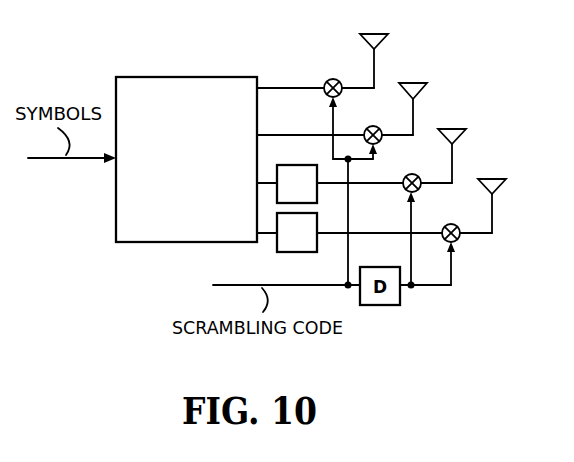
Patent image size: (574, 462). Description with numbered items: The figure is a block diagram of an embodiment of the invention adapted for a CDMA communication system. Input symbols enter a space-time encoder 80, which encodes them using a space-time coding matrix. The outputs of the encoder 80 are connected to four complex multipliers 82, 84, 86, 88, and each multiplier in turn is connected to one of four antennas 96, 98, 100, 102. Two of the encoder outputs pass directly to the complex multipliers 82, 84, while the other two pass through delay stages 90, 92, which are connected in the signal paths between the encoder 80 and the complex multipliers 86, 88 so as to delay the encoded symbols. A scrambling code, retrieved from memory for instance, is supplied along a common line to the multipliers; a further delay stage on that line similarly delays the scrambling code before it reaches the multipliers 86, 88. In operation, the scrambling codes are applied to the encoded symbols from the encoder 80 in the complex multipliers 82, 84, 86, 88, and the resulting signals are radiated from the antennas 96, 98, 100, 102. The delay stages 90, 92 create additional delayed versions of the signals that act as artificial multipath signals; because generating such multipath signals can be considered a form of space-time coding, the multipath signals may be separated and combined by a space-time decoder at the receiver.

The space-time encoder 80 is at (173, 190).
The complex multiplier 82 is at (327, 78).
The complex multiplier 84 is at (370, 126).
The complex multiplier 86 is at (407, 176).
The complex multiplier 88 is at (447, 224).
The delay stage 90 is at (303, 162).
The delay stage 92 is at (300, 253).
The antenna 96 is at (390, 36).
The antenna 98 is at (429, 85).
The antenna 100 is at (466, 131).
The antenna 102 is at (507, 184).